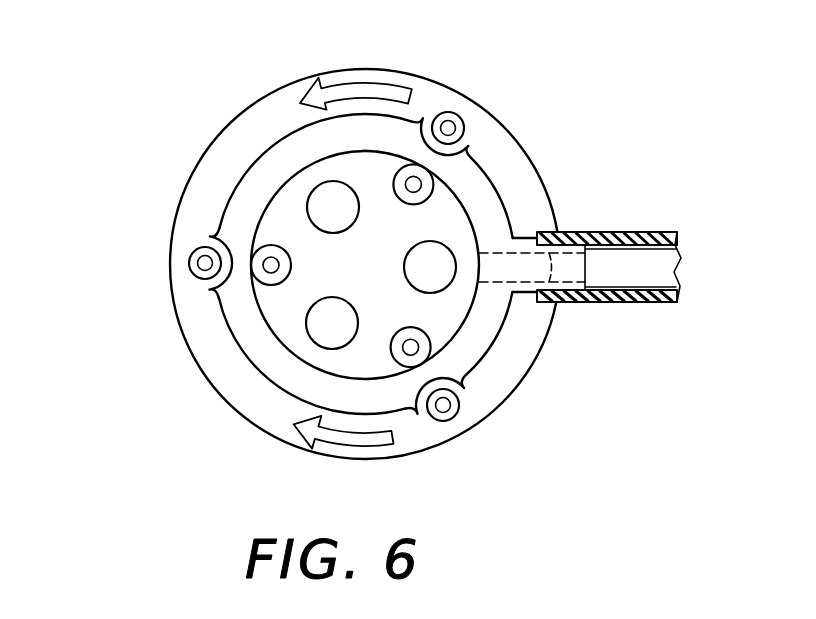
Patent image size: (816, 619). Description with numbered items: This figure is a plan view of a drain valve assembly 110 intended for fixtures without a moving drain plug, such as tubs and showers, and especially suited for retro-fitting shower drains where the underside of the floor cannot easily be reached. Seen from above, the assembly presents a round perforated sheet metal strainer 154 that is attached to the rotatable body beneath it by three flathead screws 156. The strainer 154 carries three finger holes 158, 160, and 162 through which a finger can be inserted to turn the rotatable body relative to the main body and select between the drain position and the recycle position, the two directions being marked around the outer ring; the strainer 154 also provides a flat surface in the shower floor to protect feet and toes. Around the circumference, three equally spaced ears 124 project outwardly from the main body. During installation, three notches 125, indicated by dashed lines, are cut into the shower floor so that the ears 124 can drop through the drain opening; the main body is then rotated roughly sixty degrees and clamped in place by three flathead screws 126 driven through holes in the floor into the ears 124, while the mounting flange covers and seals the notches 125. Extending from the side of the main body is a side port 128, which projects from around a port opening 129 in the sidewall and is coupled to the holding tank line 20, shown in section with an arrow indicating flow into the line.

The drain valve assembly 110 is at (131, 335).
The holding tank line 20 is at (650, 232).
The ears 124 is at (435, 103).
The notches 125 is at (261, 150).
The flathead screws 126 is at (456, 124).
The side port 128 is at (589, 264).
The port opening 129 is at (557, 294).
The perforated strainer 154 is at (373, 163).
The flathead screws 156 is at (421, 181).
The finger hole 158 is at (318, 207).
The finger hole 160 is at (432, 284).
The finger hole 162 is at (313, 320).